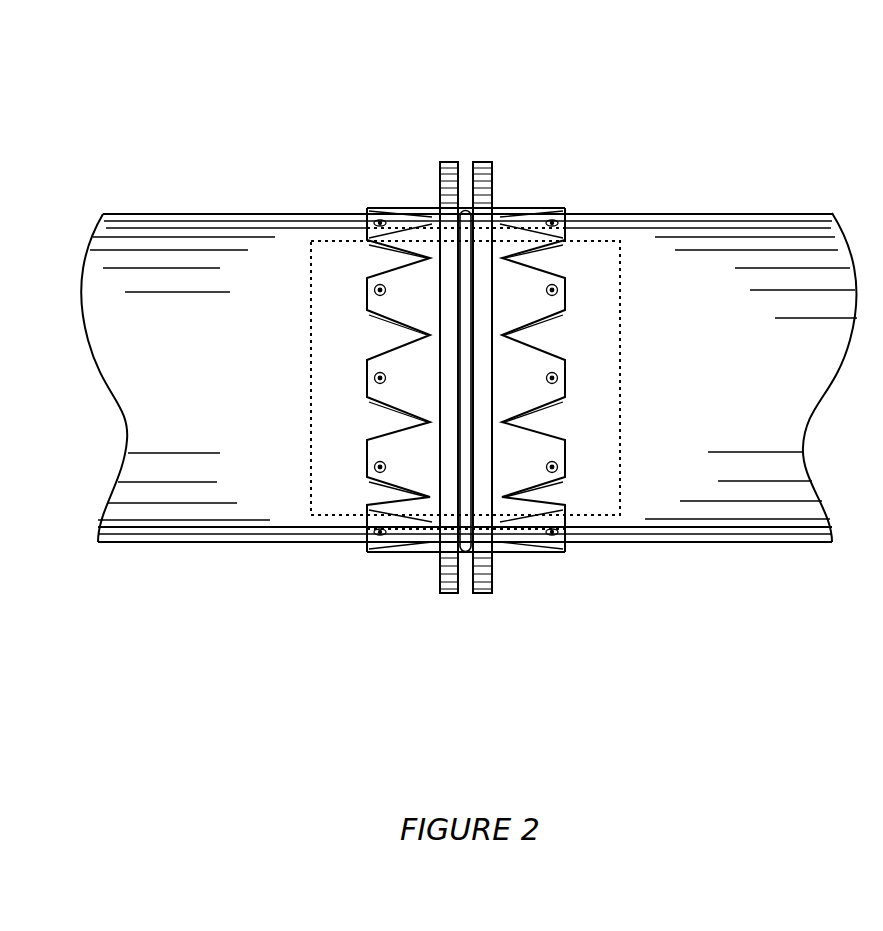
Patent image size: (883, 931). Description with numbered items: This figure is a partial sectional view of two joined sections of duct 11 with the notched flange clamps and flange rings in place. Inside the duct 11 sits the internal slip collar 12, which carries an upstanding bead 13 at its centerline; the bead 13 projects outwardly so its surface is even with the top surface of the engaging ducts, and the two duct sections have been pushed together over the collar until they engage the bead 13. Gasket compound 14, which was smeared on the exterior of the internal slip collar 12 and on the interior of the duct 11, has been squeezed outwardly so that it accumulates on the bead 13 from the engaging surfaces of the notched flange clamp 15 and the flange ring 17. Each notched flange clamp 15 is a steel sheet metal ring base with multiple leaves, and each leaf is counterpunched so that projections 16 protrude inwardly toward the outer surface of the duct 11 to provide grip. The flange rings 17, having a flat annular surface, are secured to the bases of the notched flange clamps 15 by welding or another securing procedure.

The duct 11 is at (215, 215).
The internal slip collar 12 is at (598, 520).
The upstanding bead 13 is at (466, 211).
The gasket compound 14 is at (510, 232).
The notched flange clamp 15 is at (530, 283).
The projections 16 is at (555, 377).
The flange ring 17 is at (466, 426).